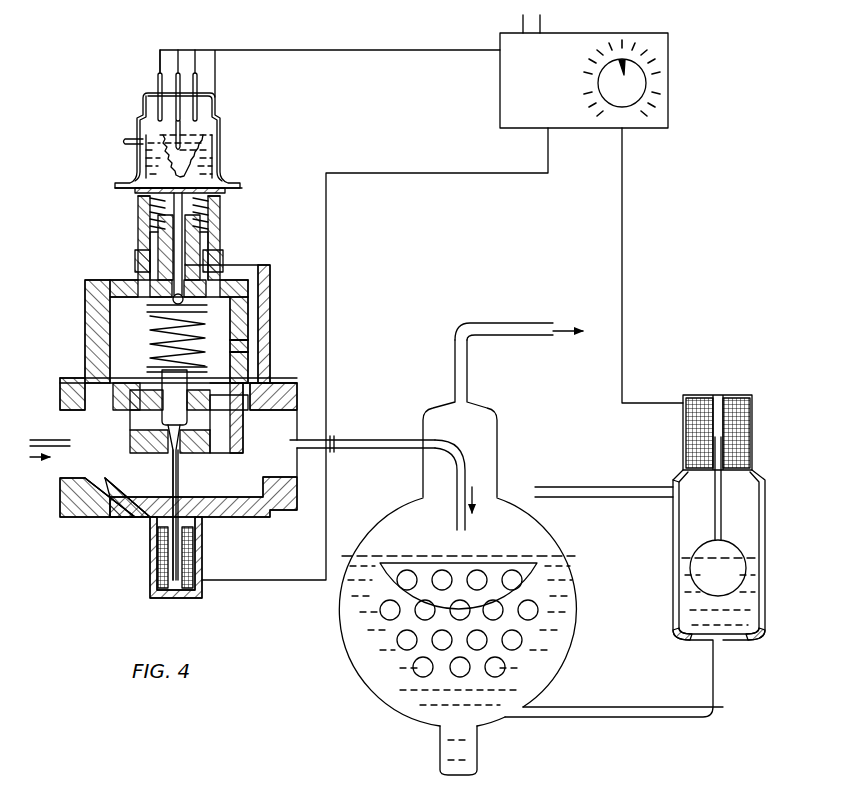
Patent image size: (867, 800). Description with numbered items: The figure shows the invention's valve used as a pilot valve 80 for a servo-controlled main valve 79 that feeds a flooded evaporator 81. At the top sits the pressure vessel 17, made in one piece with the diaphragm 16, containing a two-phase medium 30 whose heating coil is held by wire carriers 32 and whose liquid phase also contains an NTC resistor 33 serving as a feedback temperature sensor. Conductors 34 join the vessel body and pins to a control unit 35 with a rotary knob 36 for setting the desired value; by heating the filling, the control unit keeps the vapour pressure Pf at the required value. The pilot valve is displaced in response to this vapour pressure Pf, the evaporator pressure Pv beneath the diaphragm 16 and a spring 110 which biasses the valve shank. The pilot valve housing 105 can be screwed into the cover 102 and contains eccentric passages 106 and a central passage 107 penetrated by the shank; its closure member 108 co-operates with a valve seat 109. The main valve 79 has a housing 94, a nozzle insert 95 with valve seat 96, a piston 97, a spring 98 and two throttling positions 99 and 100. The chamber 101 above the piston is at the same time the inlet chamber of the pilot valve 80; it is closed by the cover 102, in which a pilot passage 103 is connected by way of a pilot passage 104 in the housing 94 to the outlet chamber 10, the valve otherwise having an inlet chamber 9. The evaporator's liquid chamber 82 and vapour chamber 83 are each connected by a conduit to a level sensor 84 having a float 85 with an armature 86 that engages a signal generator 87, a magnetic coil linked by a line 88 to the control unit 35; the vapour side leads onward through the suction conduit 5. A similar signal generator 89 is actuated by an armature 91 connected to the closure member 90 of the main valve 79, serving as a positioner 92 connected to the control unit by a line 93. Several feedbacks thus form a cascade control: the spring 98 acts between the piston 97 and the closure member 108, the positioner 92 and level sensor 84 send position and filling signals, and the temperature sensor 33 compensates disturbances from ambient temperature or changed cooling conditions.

The suction conduit 5 is at (502, 323).
The inlet chamber 9 is at (62, 465).
The outlet chamber 10 is at (286, 432).
The diaphragm 16 is at (196, 178).
The pressure vessel 17 is at (228, 124).
The two-phase medium 30 is at (140, 172).
The wire carriers 32 is at (140, 150).
The NTC resistor 33 is at (188, 118).
The conductors 34 is at (395, 50).
The control unit 35 is at (573, 42).
The rotary knob 36 is at (624, 68).
The servo-controlled main valve 79 is at (140, 530).
The pilot valve 80 is at (132, 237).
The flooded evaporator 81 is at (350, 632).
The liquid chamber 82 is at (362, 660).
The vapour chamber 83 is at (490, 443).
The level sensor 84 is at (685, 646).
The float 85 is at (703, 570).
The armature 86 is at (714, 508).
The signal generator 87 is at (683, 435).
The line 88 is at (626, 282).
The signal generator 89 is at (182, 600).
The closure member 90 is at (178, 452).
The armature 91 is at (190, 536).
The positioner 92 is at (154, 604).
The line 93 is at (328, 500).
The housing 94 is at (95, 500).
The nozzle insert 95 is at (238, 380).
The valve seat 96 is at (164, 441).
The piston 97 is at (242, 354).
The spring 98 is at (256, 300).
The throttling position 99 is at (120, 410).
The throttling position 100 is at (132, 366).
The chamber above the piston 101 is at (135, 325).
The cover 102 is at (92, 330).
The pilot passage 103 is at (253, 322).
The pilot passage 104 is at (290, 398).
The housing of the pilot valve 105 is at (140, 218).
The spring 106 is at (215, 222).
The central passage 107 is at (210, 236).
The closure member 108 is at (172, 298).
The valve seat 109 is at (222, 262).
The spring 110 is at (218, 186).
The vapour pressure Pf is at (153, 125).
The evaporator pressure Pv is at (112, 197).